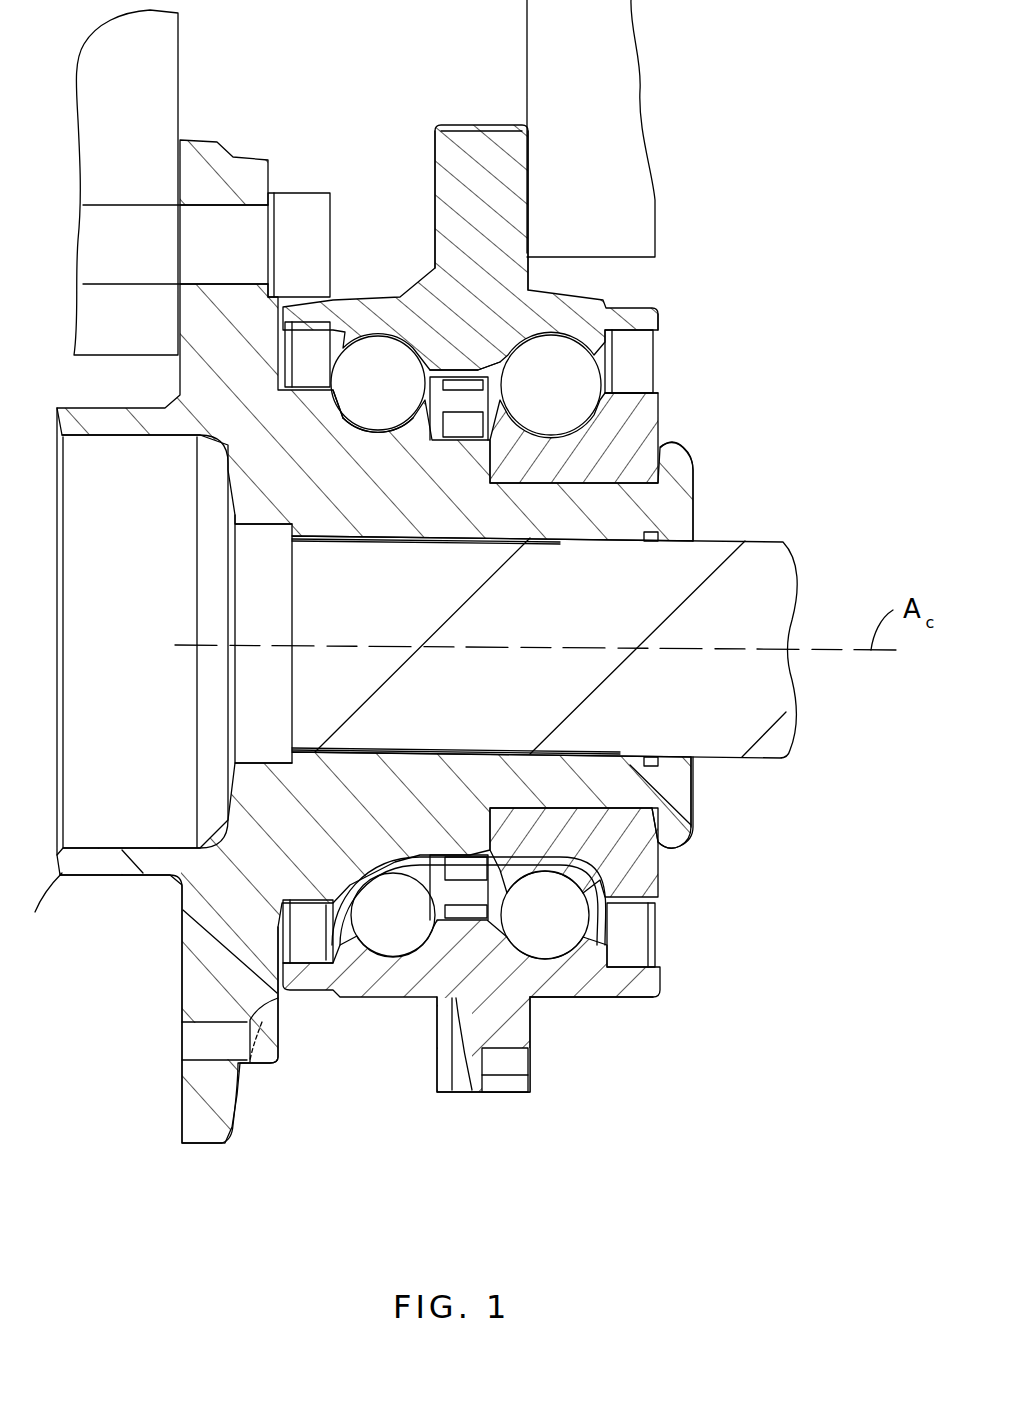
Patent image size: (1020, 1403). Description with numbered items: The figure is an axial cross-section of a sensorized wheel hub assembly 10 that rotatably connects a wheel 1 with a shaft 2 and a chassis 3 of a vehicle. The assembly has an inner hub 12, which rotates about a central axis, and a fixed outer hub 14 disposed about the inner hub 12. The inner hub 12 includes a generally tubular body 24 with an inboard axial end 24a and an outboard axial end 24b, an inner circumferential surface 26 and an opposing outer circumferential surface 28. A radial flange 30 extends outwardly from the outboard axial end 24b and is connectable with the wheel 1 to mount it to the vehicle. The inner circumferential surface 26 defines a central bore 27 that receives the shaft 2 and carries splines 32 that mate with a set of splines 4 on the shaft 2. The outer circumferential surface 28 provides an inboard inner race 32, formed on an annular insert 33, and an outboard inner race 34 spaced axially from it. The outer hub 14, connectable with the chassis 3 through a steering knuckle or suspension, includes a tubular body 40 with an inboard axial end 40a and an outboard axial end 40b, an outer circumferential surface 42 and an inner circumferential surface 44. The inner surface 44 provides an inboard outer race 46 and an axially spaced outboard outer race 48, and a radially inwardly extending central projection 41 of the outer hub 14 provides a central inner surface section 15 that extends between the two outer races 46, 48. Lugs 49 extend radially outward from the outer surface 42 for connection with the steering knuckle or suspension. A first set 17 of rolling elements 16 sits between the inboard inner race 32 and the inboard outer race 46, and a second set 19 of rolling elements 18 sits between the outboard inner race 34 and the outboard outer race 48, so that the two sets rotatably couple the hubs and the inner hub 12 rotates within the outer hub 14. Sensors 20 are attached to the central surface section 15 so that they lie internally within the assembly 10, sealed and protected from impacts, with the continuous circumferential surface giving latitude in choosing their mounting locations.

The wheel 1 is at (190, 40).
The shaft 2 is at (790, 550).
The chassis 3 is at (635, 46).
The splines of the shaft 4 is at (337, 534).
The sensorized wheel hub assembly 10 is at (835, 408).
The inner hub 12 is at (722, 823).
The outer hub 14 is at (672, 1040).
The central inner surface section 15 is at (413, 432).
The rolling elements 16 is at (577, 407).
The first set of rolling elements 17 is at (597, 325).
The rolling elements 18 is at (355, 410).
The second set of rolling elements 19 is at (378, 325).
The sensors 20 is at (462, 430).
The tubular body 24 is at (468, 762).
The inboard axial end 24a is at (693, 797).
The outboard axial end 24b is at (64, 880).
The inner circumferential surface 26 is at (270, 757).
The central bore 27 is at (258, 577).
The outer circumferential surface 28 is at (394, 935).
The radial flange 30 is at (178, 1001).
The splines 32 is at (558, 447).
The annular insert 33 is at (637, 438).
The outboard inner race 34 is at (283, 380).
The tubular body 40 is at (579, 1005).
The inboard axial end 40a is at (663, 972).
The outboard axial end 40b is at (293, 973).
The central projection 41 is at (480, 937).
The outer circumferential surface 42 is at (547, 998).
The inner circumferential surface 44 is at (347, 905).
The inboard outer race 46 is at (535, 345).
The outboard outer race 48 is at (470, 247).
The lugs 49 is at (452, 142).